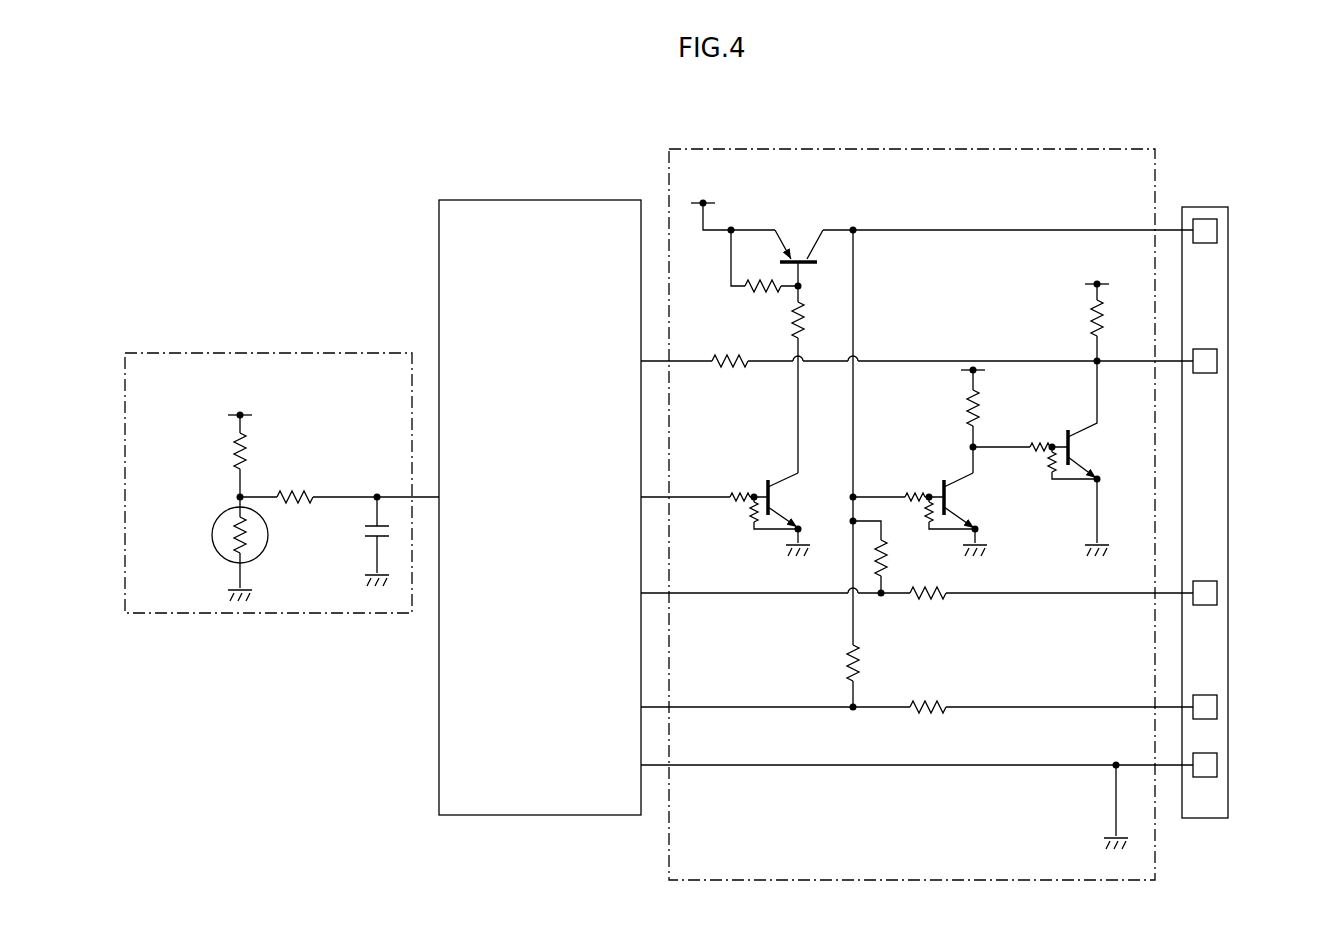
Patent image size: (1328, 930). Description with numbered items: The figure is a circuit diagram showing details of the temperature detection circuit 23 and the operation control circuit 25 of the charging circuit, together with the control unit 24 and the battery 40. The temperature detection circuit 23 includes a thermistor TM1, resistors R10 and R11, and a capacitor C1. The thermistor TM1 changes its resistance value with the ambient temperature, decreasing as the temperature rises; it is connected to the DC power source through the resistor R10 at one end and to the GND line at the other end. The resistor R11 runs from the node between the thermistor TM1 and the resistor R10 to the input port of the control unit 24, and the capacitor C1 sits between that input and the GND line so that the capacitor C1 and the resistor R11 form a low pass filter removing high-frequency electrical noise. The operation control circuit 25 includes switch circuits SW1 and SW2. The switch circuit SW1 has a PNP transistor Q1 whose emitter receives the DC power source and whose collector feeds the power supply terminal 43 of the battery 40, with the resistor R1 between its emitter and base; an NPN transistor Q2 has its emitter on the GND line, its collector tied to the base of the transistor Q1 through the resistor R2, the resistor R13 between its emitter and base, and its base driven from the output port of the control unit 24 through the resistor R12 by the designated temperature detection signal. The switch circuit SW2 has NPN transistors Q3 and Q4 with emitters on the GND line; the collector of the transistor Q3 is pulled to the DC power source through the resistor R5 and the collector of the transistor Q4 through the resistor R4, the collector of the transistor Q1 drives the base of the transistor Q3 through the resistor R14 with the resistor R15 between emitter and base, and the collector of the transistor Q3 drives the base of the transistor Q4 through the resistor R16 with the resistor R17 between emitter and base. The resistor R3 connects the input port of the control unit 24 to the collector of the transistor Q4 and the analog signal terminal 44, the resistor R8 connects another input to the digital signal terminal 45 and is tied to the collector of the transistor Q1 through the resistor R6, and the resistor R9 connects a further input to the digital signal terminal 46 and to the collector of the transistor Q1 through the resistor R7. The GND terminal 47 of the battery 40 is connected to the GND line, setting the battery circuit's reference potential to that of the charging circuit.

The temperature detection circuit 23 is at (270, 354).
The control unit 24 is at (563, 201).
The operation control circuit 25 is at (912, 150).
The battery 40 is at (1203, 208).
The power supply terminal 43 is at (1217, 232).
The analog signal terminal 44 is at (1217, 361).
The digital signal terminal 45 is at (1217, 591).
The digital signal terminal 46 is at (1217, 706).
The GND terminal 47 is at (1217, 764).
The resistor R1 is at (766, 261).
The resistor R2 is at (816, 379).
The resistor R3 is at (735, 374).
The resistor R4 is at (1078, 324).
The resistor R5 is at (956, 410).
The resistor R6 is at (886, 557).
The resistor R7 is at (835, 663).
The resistor R8 is at (928, 607).
The resistor R9 is at (928, 691).
The resistor R10 is at (216, 456).
The resistor R11 is at (308, 484).
The resistor R12 is at (730, 482).
The resistor R13 is at (752, 519).
The resistor R14 is at (907, 482).
The resistor R15 is at (928, 515).
The resistor R16 is at (1029, 430).
The resistor R17 is at (1050, 467).
The transistor Q1 is at (799, 244).
The transistor Q2 is at (797, 514).
The transistor Q3 is at (972, 514).
The transistor Q4 is at (1097, 458).
The switch circuit SW1 is at (834, 212).
The switch circuit SW2 is at (1005, 344).
The thermistor TM1 is at (213, 549).
The capacitor C1 is at (362, 540).